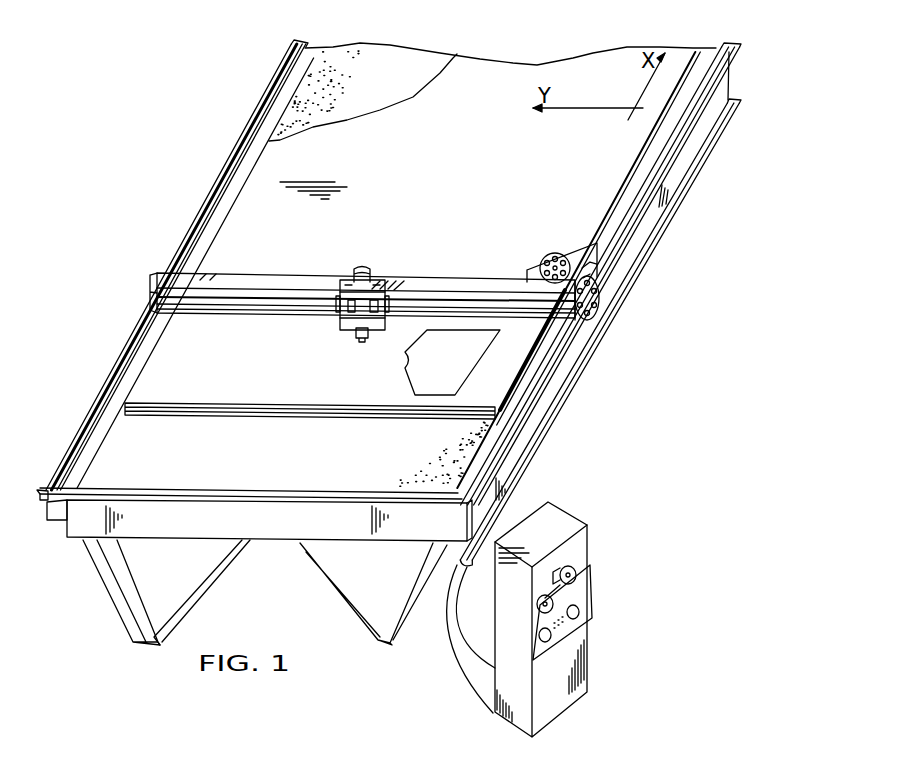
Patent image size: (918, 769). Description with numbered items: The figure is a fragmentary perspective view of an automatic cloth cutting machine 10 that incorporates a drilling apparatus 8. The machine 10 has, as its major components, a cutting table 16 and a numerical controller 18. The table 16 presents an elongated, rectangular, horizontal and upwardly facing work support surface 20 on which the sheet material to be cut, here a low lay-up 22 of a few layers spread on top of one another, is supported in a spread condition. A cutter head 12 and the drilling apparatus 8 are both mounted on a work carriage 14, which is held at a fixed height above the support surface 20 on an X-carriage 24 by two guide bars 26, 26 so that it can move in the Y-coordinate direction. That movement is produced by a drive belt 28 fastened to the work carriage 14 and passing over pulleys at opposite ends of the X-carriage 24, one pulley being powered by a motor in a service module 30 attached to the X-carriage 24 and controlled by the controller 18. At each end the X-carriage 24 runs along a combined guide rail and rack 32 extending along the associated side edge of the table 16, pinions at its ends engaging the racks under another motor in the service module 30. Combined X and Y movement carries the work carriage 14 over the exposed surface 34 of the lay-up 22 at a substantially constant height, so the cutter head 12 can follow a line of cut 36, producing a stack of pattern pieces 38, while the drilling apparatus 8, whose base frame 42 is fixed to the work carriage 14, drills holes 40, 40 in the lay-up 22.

The drilling apparatus 8 is at (355, 300).
The cloth cutting machine 10 is at (203, 177).
The cutter head 12 is at (366, 330).
The work carriage 14 is at (373, 275).
The cutting table 16 is at (707, 121).
The numerical controller 18 is at (555, 527).
The work support surface 20 is at (362, 66).
The low lay-up 22 is at (187, 392).
The X-carriage 24 is at (447, 285).
The guide bars 26 is at (220, 313).
The drive belt 28 is at (263, 301).
The service module 30 is at (545, 256).
The combined guide rail and rack 32 is at (274, 78).
The exposed surface 34 is at (477, 87).
The line of cut 36 is at (358, 335).
The stack of pattern pieces 38 is at (455, 370).
The holes 40 is at (482, 353).
The base frame 42 is at (109, 766).